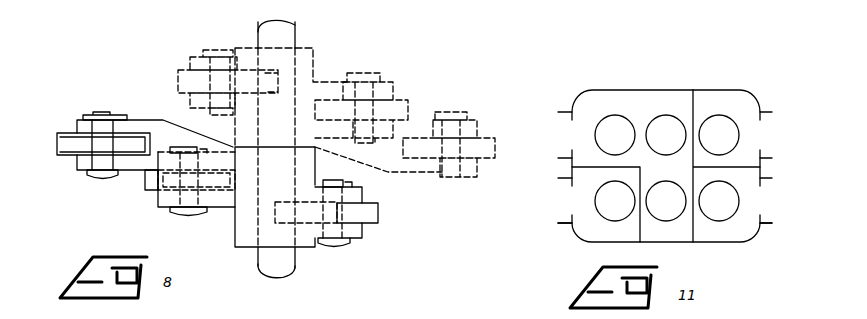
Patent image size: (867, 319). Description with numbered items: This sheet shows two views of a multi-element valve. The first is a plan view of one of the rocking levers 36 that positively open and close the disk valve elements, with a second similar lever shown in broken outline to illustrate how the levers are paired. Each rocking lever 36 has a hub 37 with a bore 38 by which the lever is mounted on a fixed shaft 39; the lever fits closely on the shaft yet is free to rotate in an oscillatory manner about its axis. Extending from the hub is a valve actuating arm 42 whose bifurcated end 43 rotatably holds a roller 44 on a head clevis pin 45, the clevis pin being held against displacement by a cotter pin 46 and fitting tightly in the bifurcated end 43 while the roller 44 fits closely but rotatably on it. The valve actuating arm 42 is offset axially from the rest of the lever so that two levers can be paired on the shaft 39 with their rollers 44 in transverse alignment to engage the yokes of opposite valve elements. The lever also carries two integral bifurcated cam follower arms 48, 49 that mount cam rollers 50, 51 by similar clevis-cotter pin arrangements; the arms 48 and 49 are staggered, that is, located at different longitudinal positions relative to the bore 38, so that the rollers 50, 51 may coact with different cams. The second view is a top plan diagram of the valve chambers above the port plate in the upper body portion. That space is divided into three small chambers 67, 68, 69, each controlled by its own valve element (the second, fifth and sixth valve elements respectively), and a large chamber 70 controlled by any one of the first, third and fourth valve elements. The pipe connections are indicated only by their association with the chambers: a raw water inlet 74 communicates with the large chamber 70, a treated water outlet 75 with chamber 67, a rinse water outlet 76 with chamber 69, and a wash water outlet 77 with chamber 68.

In FIG. 8, the rocking lever 36 is at (175, 64).
In FIG. 8, the hub 37 is at (243, 230).
In FIG. 8, the bore 38 is at (300, 172).
In FIG. 8, the fixed shaft 39 is at (287, 265).
In FIG. 8, the valve actuating arm 42 is at (163, 133).
In FIG. 8, the bifurcated end 43 is at (83, 123).
In FIG. 8, the roller 44 is at (67, 140).
In FIG. 8, the head clevis pin 45 is at (105, 178).
In FIG. 8, the cotter pin 46 is at (123, 115).
In FIG. 8, the cam follower arm 48 is at (210, 198).
In FIG. 8, the cam follower arm 49 is at (362, 238).
In FIG. 8, the cam roller 50 is at (152, 182).
In FIG. 8, the cam roller 51 is at (368, 215).
In FIG. 11, the small chamber 67 is at (590, 229).
In FIG. 11, the small chamber 68 is at (733, 105).
In FIG. 11, the small chamber 69 is at (743, 232).
In FIG. 11, the large chamber 70 is at (643, 102).
In FIG. 11, the raw water inlet 74 is at (572, 137).
In FIG. 11, the treated water outlet 75 is at (575, 197).
In FIG. 11, the rinse water outlet 76 is at (760, 203).
In FIG. 11, the wash water outlet 77 is at (763, 137).